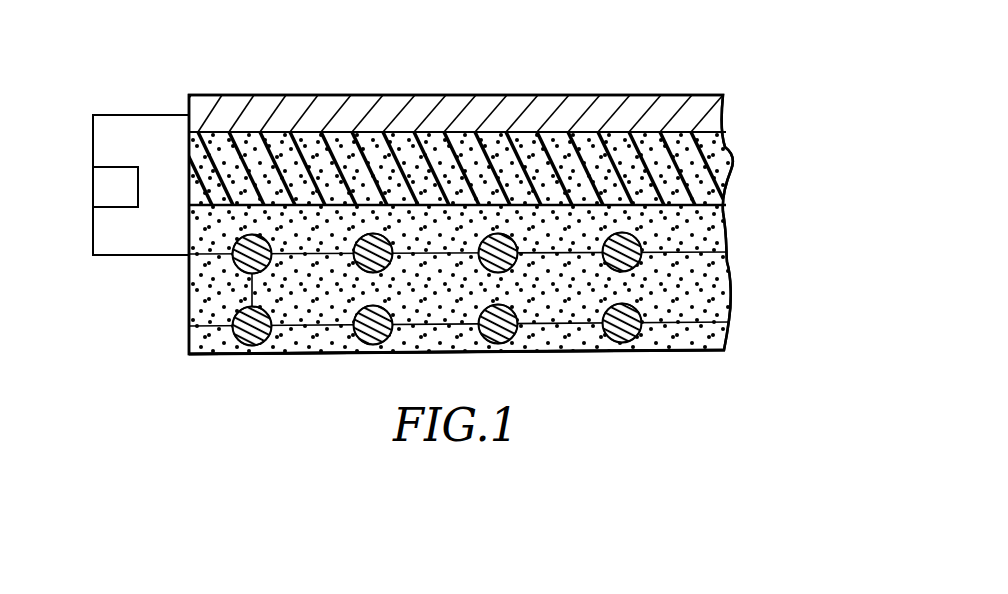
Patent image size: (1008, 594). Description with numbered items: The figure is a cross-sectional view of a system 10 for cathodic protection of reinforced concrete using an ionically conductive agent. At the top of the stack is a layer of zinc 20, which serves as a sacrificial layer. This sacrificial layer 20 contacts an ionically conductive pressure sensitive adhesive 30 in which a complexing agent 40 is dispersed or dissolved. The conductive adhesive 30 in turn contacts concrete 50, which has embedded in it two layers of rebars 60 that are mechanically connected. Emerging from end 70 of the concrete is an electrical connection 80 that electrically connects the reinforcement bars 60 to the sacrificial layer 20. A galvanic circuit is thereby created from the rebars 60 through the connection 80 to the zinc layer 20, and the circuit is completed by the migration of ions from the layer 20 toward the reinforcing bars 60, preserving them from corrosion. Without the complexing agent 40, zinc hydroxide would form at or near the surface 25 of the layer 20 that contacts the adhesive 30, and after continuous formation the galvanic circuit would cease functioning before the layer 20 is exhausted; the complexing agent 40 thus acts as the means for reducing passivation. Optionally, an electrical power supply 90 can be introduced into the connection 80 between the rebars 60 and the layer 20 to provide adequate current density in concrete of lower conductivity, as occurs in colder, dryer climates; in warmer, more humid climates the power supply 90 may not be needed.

The system for cathodic protection 10 is at (269, 83).
The layer of zinc 20 is at (723, 109).
The surface 25 is at (725, 147).
The ionically conductive pressure sensitive adhesive 30 is at (733, 158).
The complexing agent 40 is at (727, 185).
The concrete 50 is at (727, 228).
The rebars 60 is at (635, 264).
The end 70 is at (188, 285).
The electrical connection 80 is at (130, 115).
The electrical power supply 90 is at (112, 167).